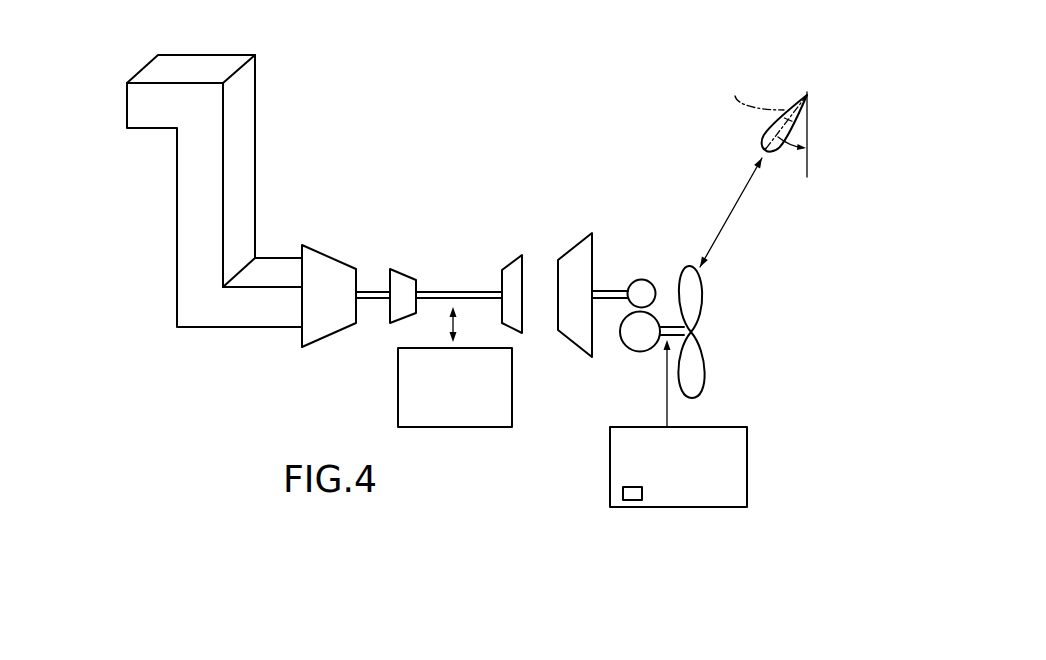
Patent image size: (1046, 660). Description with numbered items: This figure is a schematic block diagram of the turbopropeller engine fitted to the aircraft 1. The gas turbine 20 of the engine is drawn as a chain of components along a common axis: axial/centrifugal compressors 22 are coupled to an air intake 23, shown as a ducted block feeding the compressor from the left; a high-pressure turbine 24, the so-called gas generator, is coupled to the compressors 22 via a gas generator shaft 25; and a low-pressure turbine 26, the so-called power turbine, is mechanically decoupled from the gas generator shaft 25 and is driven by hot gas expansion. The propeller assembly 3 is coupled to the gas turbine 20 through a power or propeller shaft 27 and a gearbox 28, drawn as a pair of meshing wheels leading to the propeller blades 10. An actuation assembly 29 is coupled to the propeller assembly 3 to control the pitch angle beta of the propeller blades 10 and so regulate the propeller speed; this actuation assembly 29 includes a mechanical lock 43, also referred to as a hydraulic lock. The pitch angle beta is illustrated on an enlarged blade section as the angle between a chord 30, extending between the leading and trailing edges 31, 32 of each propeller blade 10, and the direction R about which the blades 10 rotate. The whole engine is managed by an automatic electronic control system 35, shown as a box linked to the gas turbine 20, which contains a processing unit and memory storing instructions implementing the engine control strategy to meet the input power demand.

The aircraft 1 is at (488, 264).
The propeller assembly 3 is at (702, 240).
The propeller blade 10 is at (701, 291).
The gas turbine 20 is at (437, 201).
The axial/centrifugal compressors 22 is at (365, 250).
The air intake 23 is at (282, 240).
The high-pressure turbine 24 is at (506, 269).
The gas generator shaft 25 is at (450, 291).
The low-pressure turbine 26 is at (572, 249).
The propeller shaft 27 is at (608, 289).
The gearbox 28 is at (646, 280).
The actuation assembly 29 is at (678, 423).
The chord 30 is at (753, 89).
The leading edge 31 is at (808, 94).
The trailing edge 32 is at (763, 153).
The electronic control system 35 is at (509, 400).
The mechanical lock 43 is at (622, 493).